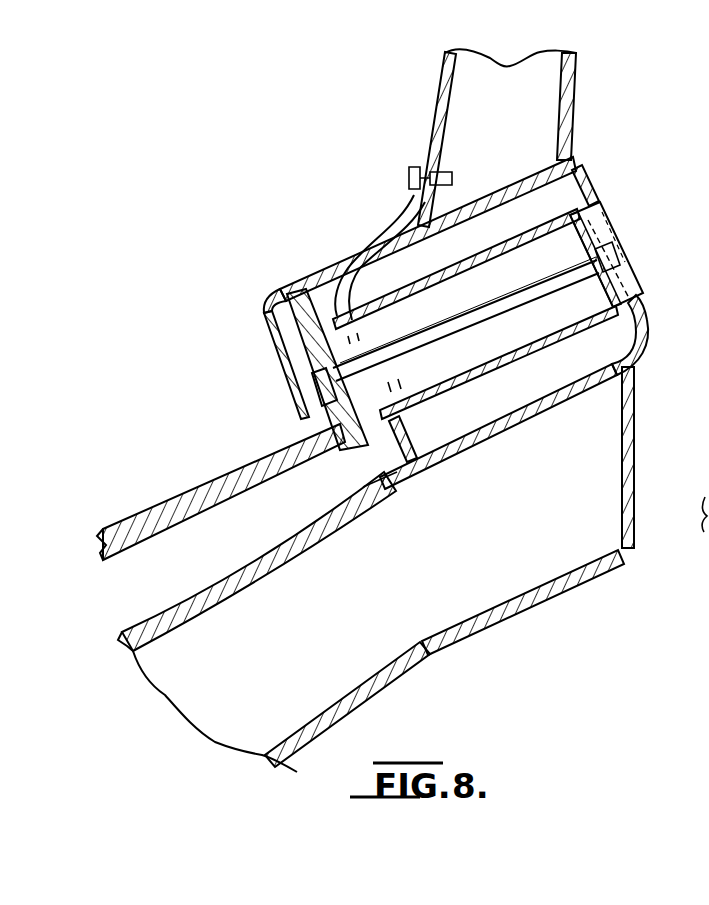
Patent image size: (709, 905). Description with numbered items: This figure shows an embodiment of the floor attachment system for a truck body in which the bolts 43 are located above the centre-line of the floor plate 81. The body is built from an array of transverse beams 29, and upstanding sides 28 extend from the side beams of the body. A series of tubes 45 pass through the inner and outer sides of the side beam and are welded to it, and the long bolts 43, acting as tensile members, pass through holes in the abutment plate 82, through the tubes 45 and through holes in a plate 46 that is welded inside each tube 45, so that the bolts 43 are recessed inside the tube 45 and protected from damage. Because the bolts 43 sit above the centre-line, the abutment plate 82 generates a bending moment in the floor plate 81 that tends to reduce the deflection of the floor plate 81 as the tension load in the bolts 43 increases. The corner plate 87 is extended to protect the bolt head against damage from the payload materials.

The upstanding sides 28 is at (576, 112).
The transverse beams 29 is at (509, 605).
The long bolts 43 is at (443, 340).
The tubes 45 is at (510, 358).
The plate 46 is at (615, 228).
The floor plate 81 is at (217, 495).
The abutment plate 82 is at (303, 343).
The corner plate 87 is at (264, 313).